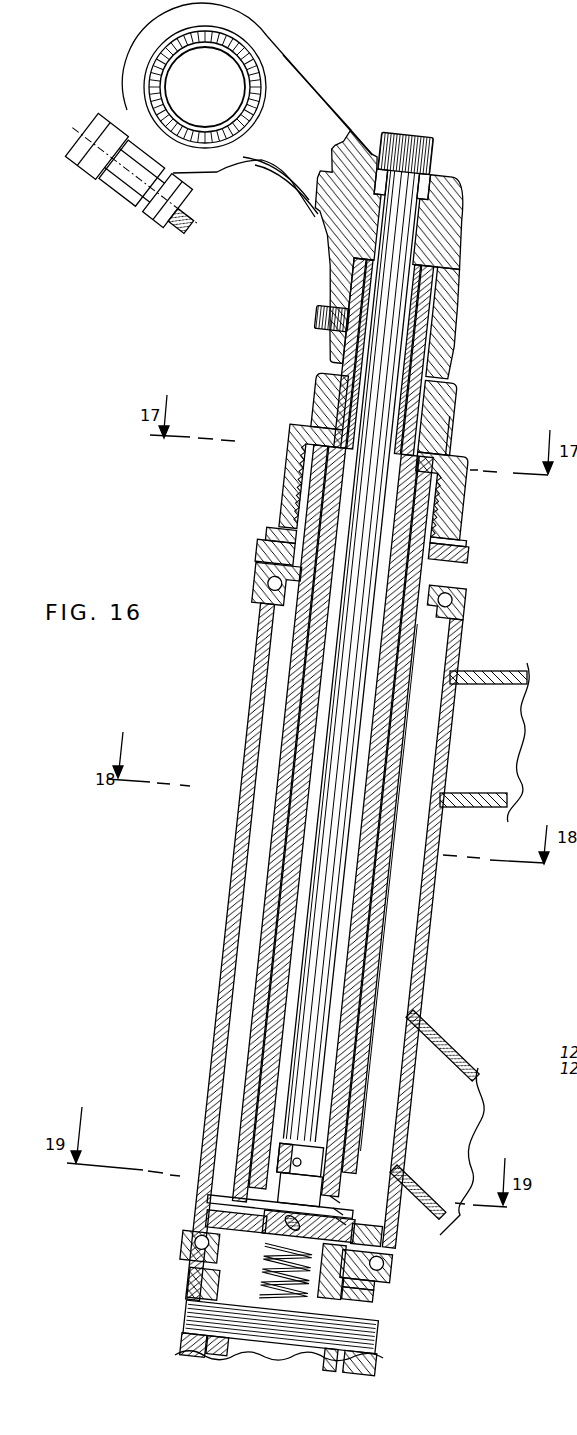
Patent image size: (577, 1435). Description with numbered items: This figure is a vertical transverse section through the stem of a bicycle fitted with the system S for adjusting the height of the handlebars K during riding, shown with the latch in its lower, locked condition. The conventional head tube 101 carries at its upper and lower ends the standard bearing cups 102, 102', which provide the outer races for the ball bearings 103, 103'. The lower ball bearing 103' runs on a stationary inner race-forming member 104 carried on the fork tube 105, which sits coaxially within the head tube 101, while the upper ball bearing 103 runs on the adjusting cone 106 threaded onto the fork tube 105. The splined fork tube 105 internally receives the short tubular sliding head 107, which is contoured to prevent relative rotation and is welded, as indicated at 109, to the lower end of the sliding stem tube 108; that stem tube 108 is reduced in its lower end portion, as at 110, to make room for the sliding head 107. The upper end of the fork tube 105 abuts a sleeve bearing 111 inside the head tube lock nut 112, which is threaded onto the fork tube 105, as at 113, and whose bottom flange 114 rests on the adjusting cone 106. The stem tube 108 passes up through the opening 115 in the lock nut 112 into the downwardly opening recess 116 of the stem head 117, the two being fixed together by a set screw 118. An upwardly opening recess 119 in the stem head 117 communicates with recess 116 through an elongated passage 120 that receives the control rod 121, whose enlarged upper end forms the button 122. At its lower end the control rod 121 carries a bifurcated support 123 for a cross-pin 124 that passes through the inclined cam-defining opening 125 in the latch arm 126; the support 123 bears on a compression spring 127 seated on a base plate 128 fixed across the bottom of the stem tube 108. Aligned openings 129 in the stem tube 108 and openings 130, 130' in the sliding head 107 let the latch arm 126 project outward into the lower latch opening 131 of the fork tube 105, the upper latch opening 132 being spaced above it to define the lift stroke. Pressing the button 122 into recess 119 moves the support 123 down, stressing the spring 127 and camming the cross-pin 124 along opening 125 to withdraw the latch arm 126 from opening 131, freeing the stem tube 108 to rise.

The handlebars K is at (262, 60).
The button 122 is at (428, 142).
The upwardly opening recess 119 is at (425, 188).
The elongated passage 120 is at (418, 215).
The control rod 121 is at (408, 268).
The stem head 117 is at (410, 277).
The downwardly opening recess 116 is at (425, 307).
The set screw 118 is at (318, 313).
The opening 115 is at (443, 370).
The sleeve bearing 111 is at (440, 403).
The head tube lock nut 112 is at (450, 422).
The threaded connection 113 is at (445, 497).
The bottom flange 114 is at (463, 543).
The adjusting cone 106 is at (465, 563).
The bearing cup 102 is at (412, 585).
The ball bearing 103 is at (405, 593).
The system for vertical adjustment of handlebars S is at (462, 648).
The upper latch opening 132 is at (390, 805).
The head tube 101 is at (425, 930).
The fork tube 105 is at (380, 958).
The sliding stem tube 108 is at (353, 987).
The bifurcated support 123 is at (280, 1143).
The diametrally reduced lower end portion 110 is at (262, 1190).
The cross-pin 124 is at (265, 1226).
The opening 130' is at (221, 1214).
The cam-defining opening 125 is at (210, 1233).
The latch arm 126 is at (200, 1244).
The compression spring 127 is at (200, 1268).
The welding 109 is at (273, 1298).
The base plate 128 is at (235, 1345).
The bearing cup 102' is at (436, 1258).
The ball bearing 103' is at (422, 1253).
The inner race-forming member 104 is at (370, 1278).
The sliding head 107 is at (367, 1294).
The opening 129 is at (335, 1200).
The opening 130 is at (431, 1160).
The lower latch opening 131 is at (341, 1222).